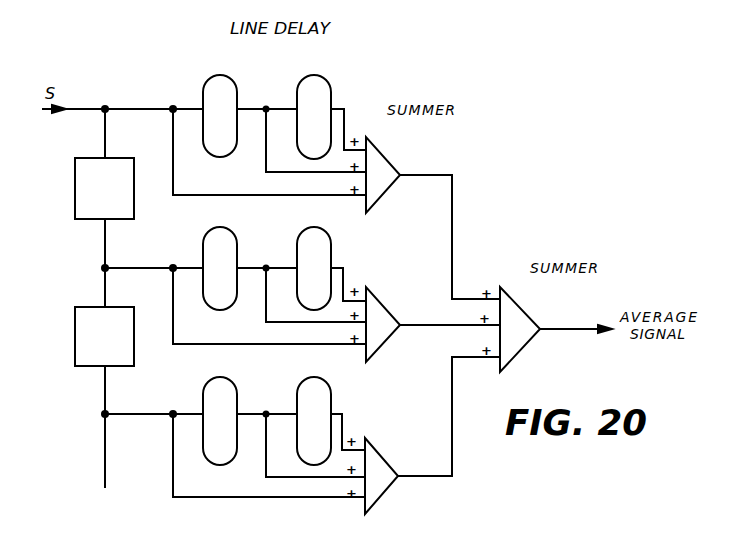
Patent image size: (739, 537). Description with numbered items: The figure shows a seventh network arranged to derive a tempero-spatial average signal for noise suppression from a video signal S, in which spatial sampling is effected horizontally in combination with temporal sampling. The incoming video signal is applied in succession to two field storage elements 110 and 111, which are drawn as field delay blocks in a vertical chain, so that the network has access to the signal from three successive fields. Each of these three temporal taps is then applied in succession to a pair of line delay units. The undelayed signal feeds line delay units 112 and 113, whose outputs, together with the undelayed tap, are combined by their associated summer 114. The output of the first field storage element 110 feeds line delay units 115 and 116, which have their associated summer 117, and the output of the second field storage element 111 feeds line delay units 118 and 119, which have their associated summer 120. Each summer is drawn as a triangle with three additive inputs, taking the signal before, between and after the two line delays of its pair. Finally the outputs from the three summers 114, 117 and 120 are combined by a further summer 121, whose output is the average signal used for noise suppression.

The field storage element 110 is at (74, 180).
The field storage element 111 is at (75, 332).
The line delay unit 112 is at (211, 79).
The line delay unit 113 is at (318, 79).
The summer 114 is at (388, 165).
The line delay unit 115 is at (204, 238).
The line delay unit 116 is at (330, 246).
The summer 117 is at (388, 305).
The line delay unit 118 is at (196, 393).
The line delay unit 119 is at (330, 398).
The summer 120 is at (383, 454).
The summer 121 is at (535, 318).